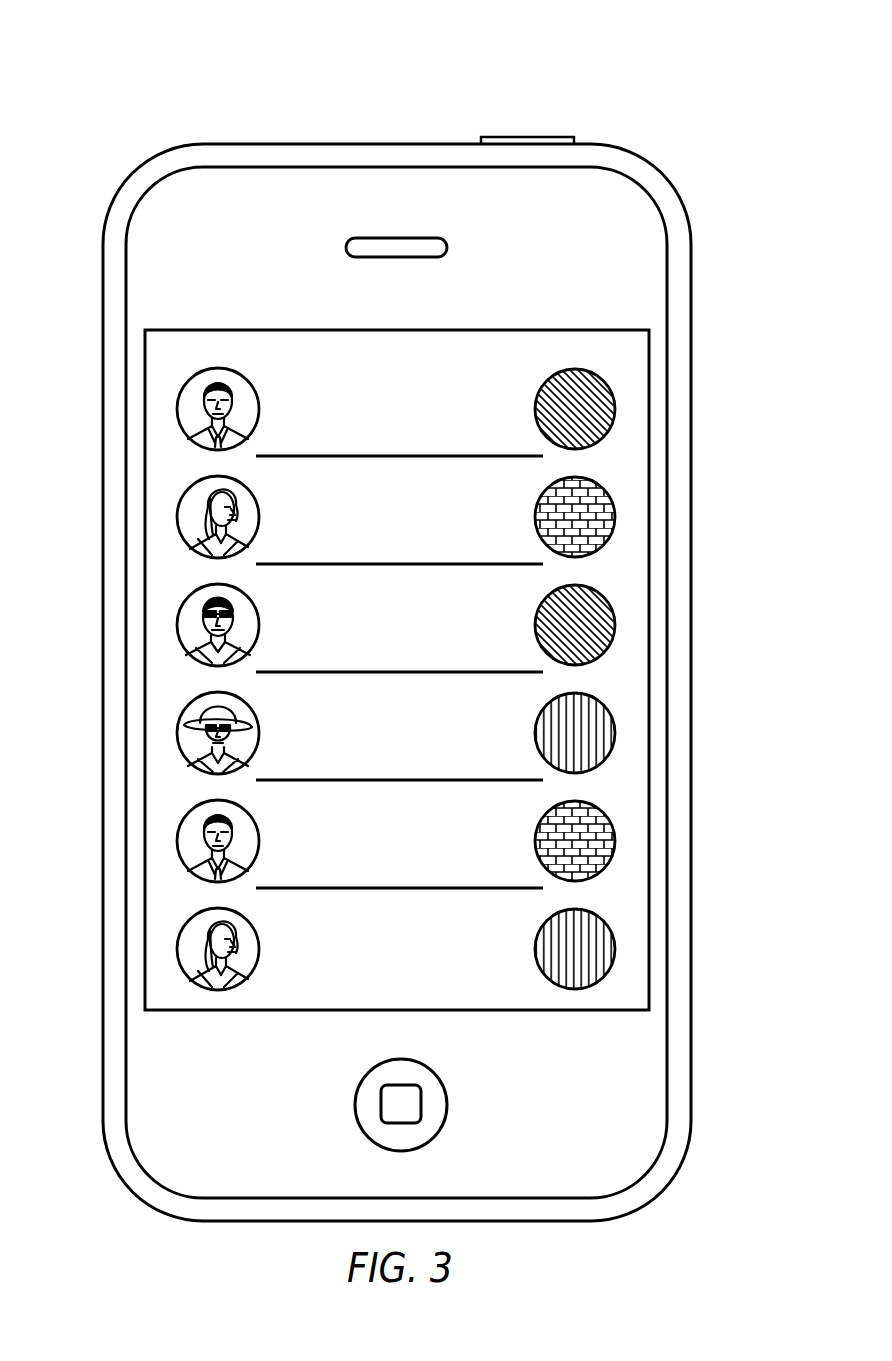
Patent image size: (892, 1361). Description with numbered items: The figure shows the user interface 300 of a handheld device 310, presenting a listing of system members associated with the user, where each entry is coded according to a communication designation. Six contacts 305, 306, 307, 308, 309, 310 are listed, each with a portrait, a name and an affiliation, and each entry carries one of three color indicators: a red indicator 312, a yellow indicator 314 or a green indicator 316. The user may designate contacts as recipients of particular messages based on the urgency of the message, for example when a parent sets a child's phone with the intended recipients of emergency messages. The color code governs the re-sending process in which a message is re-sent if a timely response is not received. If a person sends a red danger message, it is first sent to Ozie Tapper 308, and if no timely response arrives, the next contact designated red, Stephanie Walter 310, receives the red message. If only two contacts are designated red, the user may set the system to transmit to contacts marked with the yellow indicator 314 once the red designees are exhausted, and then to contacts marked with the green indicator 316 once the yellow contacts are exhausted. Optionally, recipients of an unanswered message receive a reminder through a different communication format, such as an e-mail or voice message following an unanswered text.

The user interface 300 is at (163, 374).
The contact 305 is at (355, 411).
The contact 306 is at (381, 520).
The contact 307 is at (381, 628).
The contact (Ozie Tapper) 308 is at (381, 735).
The contact 309 is at (355, 845).
The device / contact (Stephanie Walter) 310 is at (381, 952).
The red indicator 312 is at (615, 734).
The yellow indicator 314 is at (615, 518).
The green indicator 316 is at (615, 410).